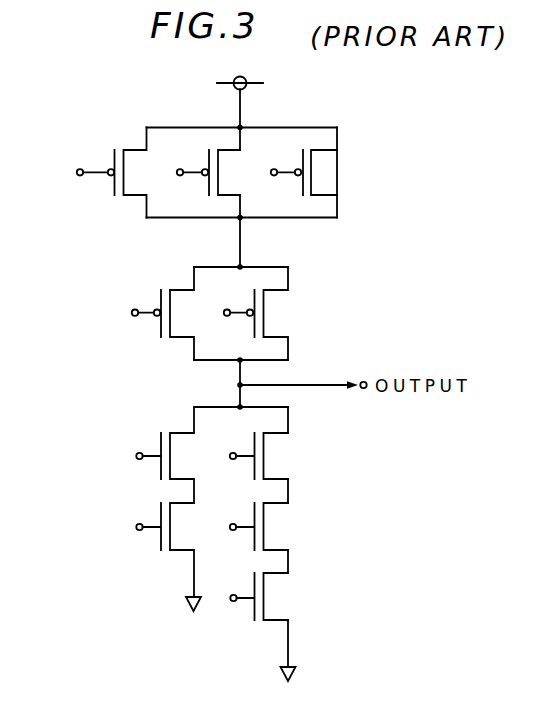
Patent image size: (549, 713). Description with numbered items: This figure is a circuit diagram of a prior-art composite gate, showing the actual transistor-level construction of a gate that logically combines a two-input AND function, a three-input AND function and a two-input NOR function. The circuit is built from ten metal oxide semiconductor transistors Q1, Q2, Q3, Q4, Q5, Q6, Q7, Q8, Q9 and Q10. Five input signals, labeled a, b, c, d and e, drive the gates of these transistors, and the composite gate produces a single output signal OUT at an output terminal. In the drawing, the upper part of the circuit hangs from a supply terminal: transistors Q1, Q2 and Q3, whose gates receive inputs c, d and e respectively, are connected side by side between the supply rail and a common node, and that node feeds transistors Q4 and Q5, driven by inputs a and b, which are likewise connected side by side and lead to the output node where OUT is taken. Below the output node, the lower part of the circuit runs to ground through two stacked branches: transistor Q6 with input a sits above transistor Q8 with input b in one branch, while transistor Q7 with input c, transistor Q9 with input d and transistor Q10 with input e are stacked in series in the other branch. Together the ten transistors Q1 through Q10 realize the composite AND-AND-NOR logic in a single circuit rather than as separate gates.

The MOS transistor Q1 is at (102, 176).
The MOS transistor Q2 is at (200, 183).
The MOS transistor Q3 is at (295, 183).
The MOS transistor Q4 is at (155, 314).
The MOS transistor Q5 is at (248, 313).
The MOS transistor Q6 is at (156, 442).
The MOS transistor Q7 is at (249, 444).
The MOS transistor Q8 is at (156, 539).
The MOS transistor Q9 is at (248, 537).
The MOS transistor Q10 is at (250, 610).